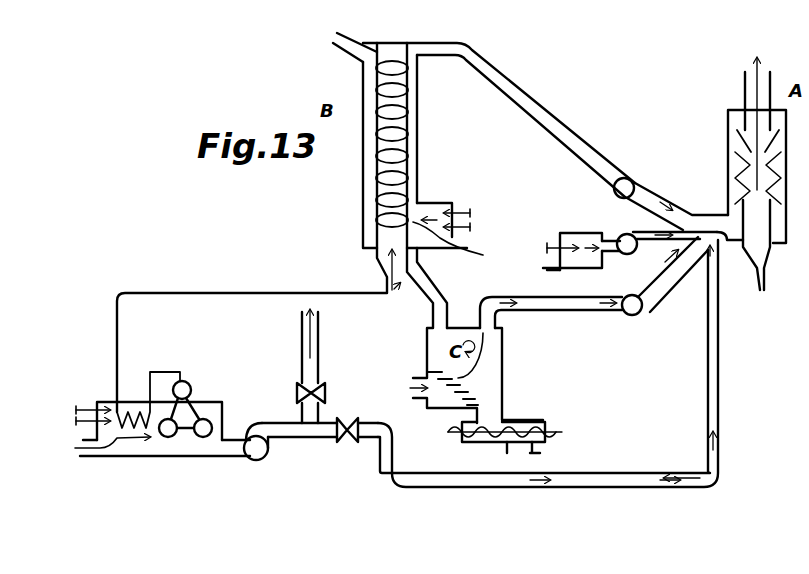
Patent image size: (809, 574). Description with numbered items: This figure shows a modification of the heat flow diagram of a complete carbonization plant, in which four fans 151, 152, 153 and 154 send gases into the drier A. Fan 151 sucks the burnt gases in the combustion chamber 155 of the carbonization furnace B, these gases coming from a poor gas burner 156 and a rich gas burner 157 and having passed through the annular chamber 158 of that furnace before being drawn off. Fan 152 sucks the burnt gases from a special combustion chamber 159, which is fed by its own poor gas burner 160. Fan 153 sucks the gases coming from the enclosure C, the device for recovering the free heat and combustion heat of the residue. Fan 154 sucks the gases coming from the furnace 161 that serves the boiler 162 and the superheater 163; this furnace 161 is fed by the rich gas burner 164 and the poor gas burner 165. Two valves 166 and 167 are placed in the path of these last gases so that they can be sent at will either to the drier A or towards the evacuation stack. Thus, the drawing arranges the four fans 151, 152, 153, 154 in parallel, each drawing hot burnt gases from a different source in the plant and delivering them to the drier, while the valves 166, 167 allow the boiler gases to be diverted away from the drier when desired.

The fan 151 is at (627, 180).
The fan 152 is at (634, 232).
The fan 153 is at (639, 308).
The fan 154 is at (255, 460).
The combustion chamber 155 is at (417, 232).
The poor gas burner 156 is at (453, 212).
The rich gas burner 157 is at (471, 228).
The annular chamber 158 is at (374, 184).
The special combustion chamber 159 is at (578, 232).
The poor gas burner 160 is at (547, 246).
The furnace 161 is at (143, 448).
The boiler 162 is at (192, 390).
The superheater 163 is at (130, 407).
The rich gas burner 164 is at (87, 408).
The poor gas burner 165 is at (76, 426).
The valve 166 is at (318, 399).
The valve 167 is at (348, 421).